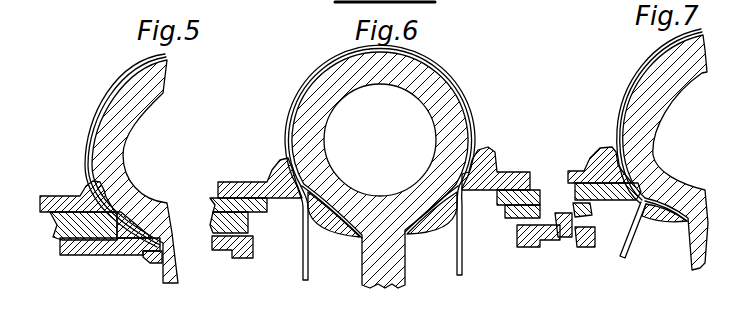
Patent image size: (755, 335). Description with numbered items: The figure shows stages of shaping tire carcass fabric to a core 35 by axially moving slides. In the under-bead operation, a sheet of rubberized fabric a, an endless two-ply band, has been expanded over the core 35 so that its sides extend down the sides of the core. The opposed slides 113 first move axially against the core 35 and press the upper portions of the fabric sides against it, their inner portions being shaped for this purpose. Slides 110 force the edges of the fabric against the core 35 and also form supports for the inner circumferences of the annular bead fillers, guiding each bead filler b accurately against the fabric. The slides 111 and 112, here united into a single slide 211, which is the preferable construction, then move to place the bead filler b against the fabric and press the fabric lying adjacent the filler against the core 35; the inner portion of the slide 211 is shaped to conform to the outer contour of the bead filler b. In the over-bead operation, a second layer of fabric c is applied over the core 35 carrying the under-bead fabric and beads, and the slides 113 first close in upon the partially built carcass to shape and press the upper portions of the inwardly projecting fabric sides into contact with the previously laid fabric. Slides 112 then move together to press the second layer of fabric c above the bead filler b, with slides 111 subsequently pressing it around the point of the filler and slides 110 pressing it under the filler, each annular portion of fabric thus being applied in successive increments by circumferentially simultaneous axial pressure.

In FIG. 5, the core 35 is at (123, 127).
In FIG. 6, the core 35 is at (317, 120).
In FIG. 7, the core 35 is at (645, 108).
In FIG. 5, the slides 113 is at (94, 185).
In FIG. 6, the slides 113 is at (288, 177).
In FIG. 7, the slides 113 is at (616, 147).
In FIG. 6, the slide 112 is at (262, 206).
In FIG. 7, the slide 112 is at (618, 199).
In FIG. 6, the slide 111 is at (240, 221).
In FIG. 7, the slide 111 is at (596, 219).
In FIG. 5, the slides 110 is at (157, 259).
In FIG. 6, the slides 110 is at (255, 254).
In FIG. 7, the slides 110 is at (588, 249).
In FIG. 5, the single slide 211 is at (64, 228).
In FIG. 5, the sheet of rubberized fabric a is at (134, 77).
In FIG. 6, the sheet of rubberized fabric a is at (338, 62).
In FIG. 7, the sheet of rubberized fabric a is at (655, 57).
In FIG. 5, the bead filler b is at (131, 236).
In FIG. 6, the bead filler b is at (333, 228).
In FIG. 7, the bead filler b is at (665, 213).
In FIG. 6, the second layer of fabric c is at (442, 69).
In FIG. 7, the second layer of fabric c is at (625, 89).